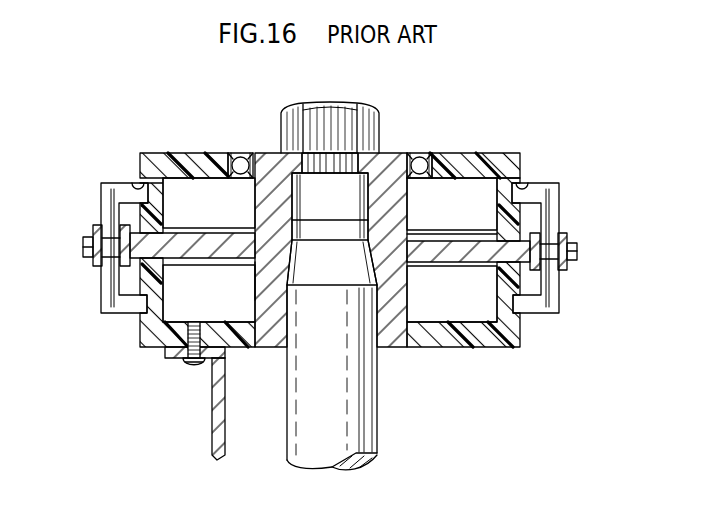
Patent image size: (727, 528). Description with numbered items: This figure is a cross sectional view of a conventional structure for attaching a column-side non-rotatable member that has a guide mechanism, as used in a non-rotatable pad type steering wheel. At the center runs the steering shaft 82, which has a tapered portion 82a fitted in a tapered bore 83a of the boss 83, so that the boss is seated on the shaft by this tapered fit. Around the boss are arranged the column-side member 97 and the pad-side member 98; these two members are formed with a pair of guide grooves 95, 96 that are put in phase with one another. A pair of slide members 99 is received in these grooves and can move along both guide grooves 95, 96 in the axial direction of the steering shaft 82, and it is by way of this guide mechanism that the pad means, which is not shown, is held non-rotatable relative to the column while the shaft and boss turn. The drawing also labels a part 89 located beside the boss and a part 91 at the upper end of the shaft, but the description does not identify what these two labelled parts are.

The steering shaft 82 is at (377, 385).
The tapered portion 82a is at (401, 229).
The boss 83 is at (392, 160).
The tapered bore 83a is at (255, 276).
The bearing housing 89 is at (224, 229).
The bolt head 91 is at (378, 112).
The guide groove 95 is at (131, 314).
The guide groove 96 is at (138, 185).
The column-side member 97 is at (161, 291).
The pad-side member 98 is at (163, 196).
The slide member 99 is at (103, 210).